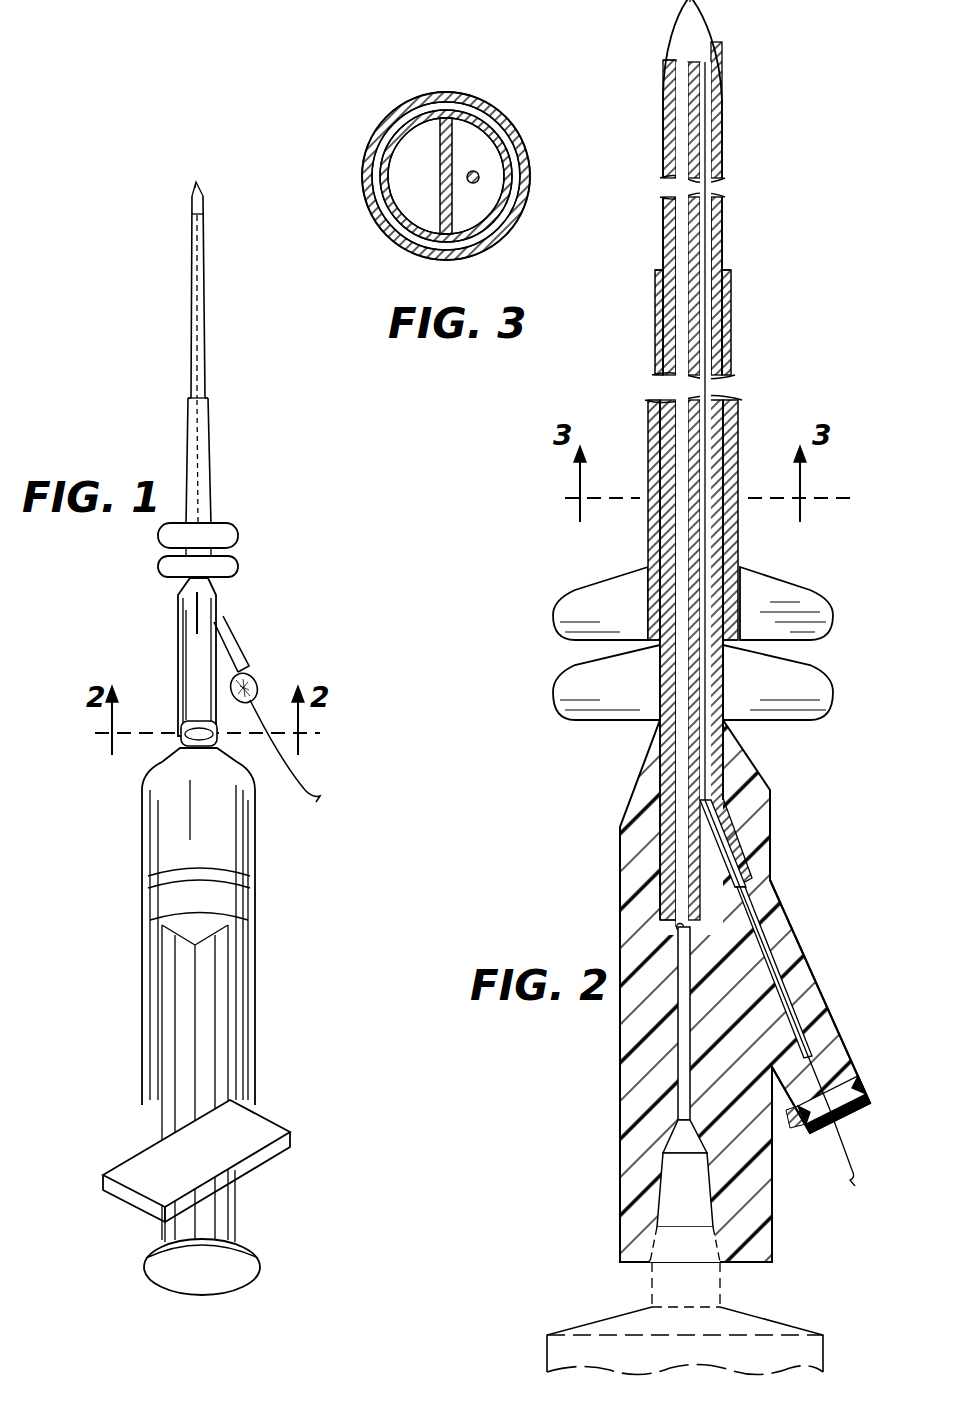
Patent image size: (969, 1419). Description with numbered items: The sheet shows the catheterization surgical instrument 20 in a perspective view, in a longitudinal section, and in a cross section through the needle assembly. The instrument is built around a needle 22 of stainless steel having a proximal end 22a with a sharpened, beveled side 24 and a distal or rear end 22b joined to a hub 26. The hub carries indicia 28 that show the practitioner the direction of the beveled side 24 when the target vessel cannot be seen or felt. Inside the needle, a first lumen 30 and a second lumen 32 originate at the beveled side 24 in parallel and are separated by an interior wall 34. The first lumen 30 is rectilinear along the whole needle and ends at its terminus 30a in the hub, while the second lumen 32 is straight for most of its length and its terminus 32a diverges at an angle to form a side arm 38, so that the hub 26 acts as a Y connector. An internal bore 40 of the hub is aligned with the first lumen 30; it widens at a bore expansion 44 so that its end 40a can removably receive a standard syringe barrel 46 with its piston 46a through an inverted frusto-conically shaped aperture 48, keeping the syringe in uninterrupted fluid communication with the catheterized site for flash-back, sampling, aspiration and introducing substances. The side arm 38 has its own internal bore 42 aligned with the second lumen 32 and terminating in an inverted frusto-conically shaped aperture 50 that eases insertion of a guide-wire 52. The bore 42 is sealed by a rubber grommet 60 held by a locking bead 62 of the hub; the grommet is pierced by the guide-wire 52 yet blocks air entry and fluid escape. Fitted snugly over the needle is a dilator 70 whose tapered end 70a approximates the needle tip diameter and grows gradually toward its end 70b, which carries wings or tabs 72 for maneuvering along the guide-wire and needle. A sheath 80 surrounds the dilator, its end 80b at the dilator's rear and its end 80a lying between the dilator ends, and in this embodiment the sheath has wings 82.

In FIG. 1, the catheterization surgical instrument 20 is at (140, 666).
In FIG. 2, the catheterization surgical instrument 20 is at (845, 832).
In FIG. 1, the needle 22 is at (204, 205).
In FIG. 3, the needle 22 is at (372, 96).
In FIG. 2, the needle 22 is at (726, 236).
In FIG. 2, the proximal end of needle 22a is at (722, 82).
In FIG. 2, the distal or rear end of needle 22b is at (668, 836).
In FIG. 1, the beveled side 24 is at (198, 185).
In FIG. 2, the beveled side 24 is at (706, 12).
In FIG. 1, the hub 26 is at (178, 660).
In FIG. 2, the hub 26 is at (655, 806).
In FIG. 1, the indicia 28 is at (198, 616).
In FIG. 3, the first lumen 30 is at (415, 175).
In FIG. 2, the first lumen 30 is at (672, 114).
In FIG. 2, the terminus of first lumen 30a is at (676, 927).
In FIG. 3, the second lumen 32 is at (495, 225).
In FIG. 2, the second lumen 32 is at (718, 130).
In FIG. 2, the terminus of second lumen 32a is at (746, 886).
In FIG. 3, the interior wall 34 is at (458, 124).
In FIG. 2, the interior wall 34 is at (700, 66).
In FIG. 1, the side arm 38 is at (236, 660).
In FIG. 2, the side arm 38 is at (848, 1066).
In FIG. 2, the internal bore 40 is at (680, 1016).
In FIG. 2, the end of bore 40a is at (683, 1116).
In FIG. 2, the internal bore of side arm 42 is at (797, 1046).
In FIG. 2, the bore expansion 44 is at (680, 1140).
In FIG. 1, the syringe barrel 46 is at (240, 1000).
In FIG. 2, the syringe barrel 46 is at (590, 1325).
In FIG. 1, the piston 46a is at (228, 1278).
In FIG. 2, the inverted frusto-conically shaped aperture 48 is at (672, 1195).
In FIG. 2, the inverted frusto-conically shaped aperture 50 is at (846, 1128).
In FIG. 1, the guide-wire 52 is at (308, 790).
In FIG. 3, the guide-wire 52 is at (480, 177).
In FIG. 2, the guide-wire 52 is at (776, 986).
In FIG. 1, the grommet 60 is at (252, 682).
In FIG. 2, the grommet 60 is at (818, 1136).
In FIG. 2, the locking bead 62 is at (866, 1096).
In FIG. 1, the dilator 70 is at (190, 262).
In FIG. 3, the dilator 70 is at (412, 108).
In FIG. 2, the dilator 70 is at (663, 232).
In FIG. 1, the end of dilator 70a is at (204, 226).
In FIG. 2, the end of dilator 70a is at (664, 96).
In FIG. 1, the end of dilator 70b is at (176, 576).
In FIG. 2, the end of dilator 70b is at (664, 722).
In FIG. 1, the wings or tabs 72 is at (238, 566).
In FIG. 2, the wings or tabs 72 is at (565, 690).
In FIG. 1, the sheath 80 is at (208, 470).
In FIG. 3, the sheath 80 is at (366, 200).
In FIG. 2, the sheath 80 is at (655, 424).
In FIG. 1, the end of sheath 80a is at (207, 402).
In FIG. 2, the end of sheath 80a is at (733, 280).
In FIG. 1, the end of sheath 80b is at (160, 533).
In FIG. 2, the end of sheath 80b is at (735, 630).
In FIG. 1, the wings 82 is at (232, 524).
In FIG. 2, the wings 82 is at (620, 610).